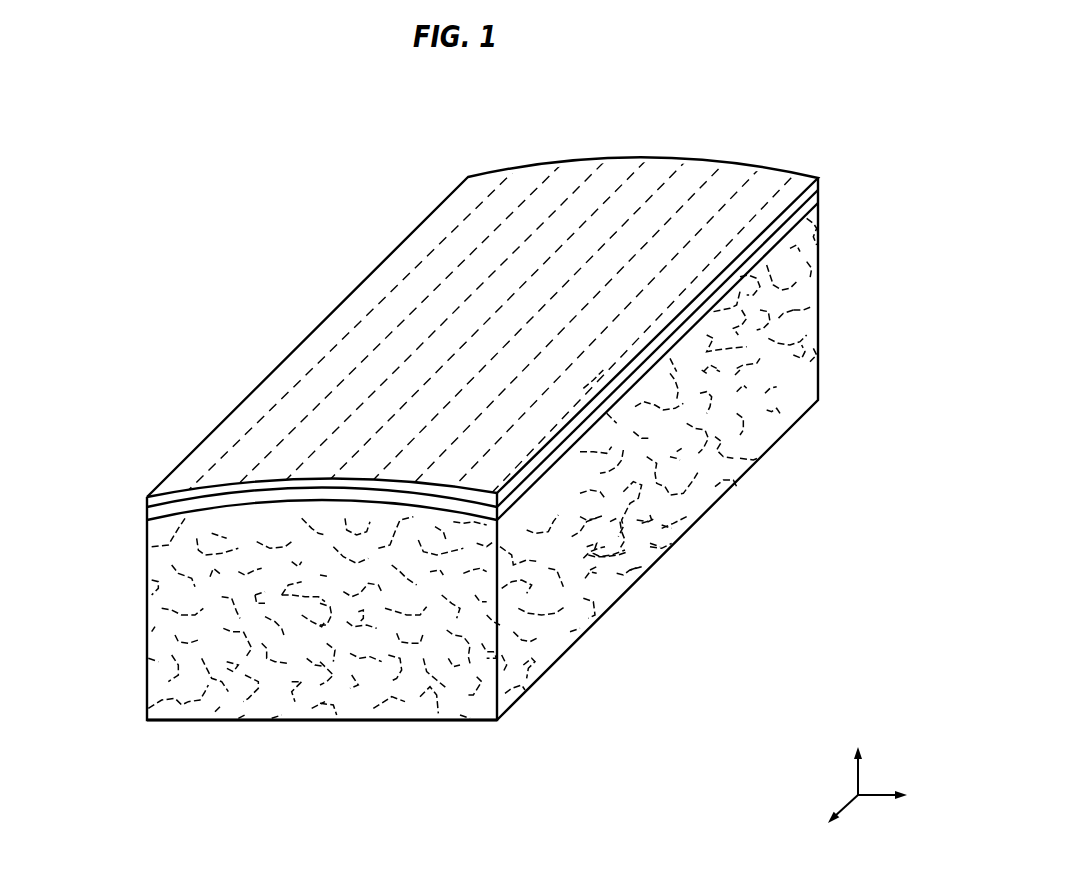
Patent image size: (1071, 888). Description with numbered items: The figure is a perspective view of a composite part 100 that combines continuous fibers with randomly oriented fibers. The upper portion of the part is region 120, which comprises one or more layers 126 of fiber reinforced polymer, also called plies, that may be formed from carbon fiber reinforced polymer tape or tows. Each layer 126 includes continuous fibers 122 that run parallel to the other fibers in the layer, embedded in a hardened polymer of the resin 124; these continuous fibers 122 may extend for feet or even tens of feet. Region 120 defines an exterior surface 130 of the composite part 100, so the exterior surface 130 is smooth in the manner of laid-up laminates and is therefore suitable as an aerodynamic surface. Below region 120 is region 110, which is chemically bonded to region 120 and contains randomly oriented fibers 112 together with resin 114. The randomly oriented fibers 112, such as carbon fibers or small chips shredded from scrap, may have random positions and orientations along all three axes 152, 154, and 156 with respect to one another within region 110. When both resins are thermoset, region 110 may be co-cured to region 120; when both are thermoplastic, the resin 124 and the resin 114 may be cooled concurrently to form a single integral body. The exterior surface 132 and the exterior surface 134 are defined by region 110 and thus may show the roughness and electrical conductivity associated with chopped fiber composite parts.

The composite part 100 is at (705, 656).
The region 110 is at (63, 523).
The randomly oriented fibers 112 is at (173, 584).
The resin 114 is at (190, 697).
The region 120 is at (63, 497).
The continuous fibers 122 is at (400, 282).
The resin 124 is at (767, 186).
The layers 126 is at (146, 502).
The exterior surface 130 is at (243, 426).
The exterior surface 132 is at (815, 326).
The exterior surface 134 is at (411, 697).
The axis 152 is at (880, 798).
The axis 154 is at (858, 772).
The axis 156 is at (842, 803).